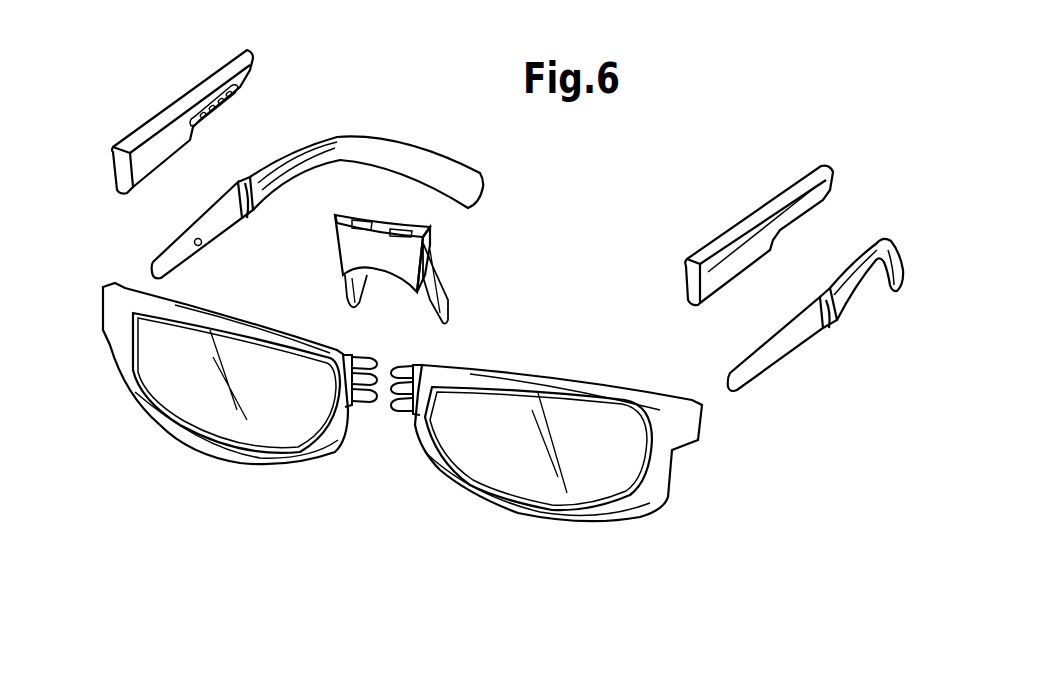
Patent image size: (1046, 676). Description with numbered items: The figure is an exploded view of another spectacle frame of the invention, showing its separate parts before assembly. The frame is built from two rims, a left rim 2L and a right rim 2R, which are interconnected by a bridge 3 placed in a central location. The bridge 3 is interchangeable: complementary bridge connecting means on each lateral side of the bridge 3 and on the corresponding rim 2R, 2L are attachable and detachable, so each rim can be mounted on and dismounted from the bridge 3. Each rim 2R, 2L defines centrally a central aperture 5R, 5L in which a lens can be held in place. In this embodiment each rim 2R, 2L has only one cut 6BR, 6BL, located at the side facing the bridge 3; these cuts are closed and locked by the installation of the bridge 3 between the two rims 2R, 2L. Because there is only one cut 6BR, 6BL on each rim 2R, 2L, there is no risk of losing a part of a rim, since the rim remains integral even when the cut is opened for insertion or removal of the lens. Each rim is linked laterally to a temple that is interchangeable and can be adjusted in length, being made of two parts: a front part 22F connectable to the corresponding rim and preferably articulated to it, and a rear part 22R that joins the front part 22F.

The front part 22F is at (158, 118).
The rear part 22R is at (323, 150).
The bridge 3 is at (380, 227).
The right rim 2R is at (233, 460).
The left rim 2L is at (597, 522).
The central aperture 5R is at (203, 380).
The central aperture 5L is at (520, 453).
The cut 6BR is at (323, 387).
The cut 6BL is at (443, 407).